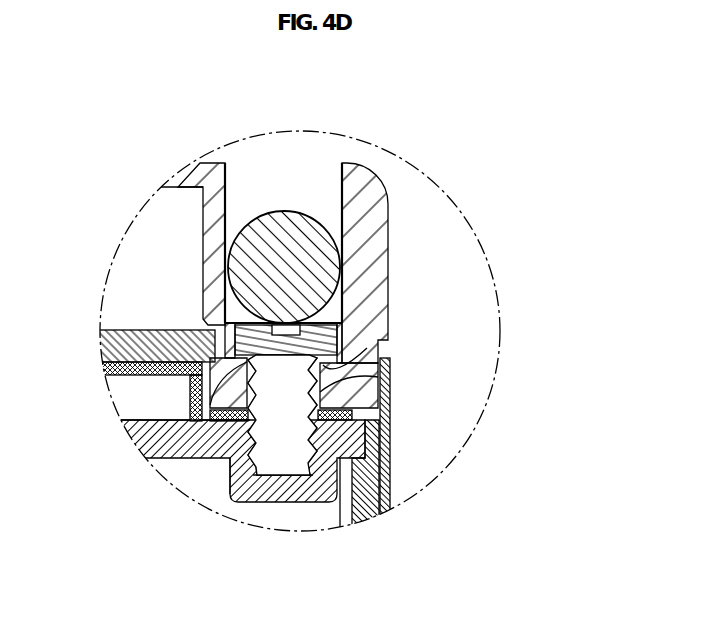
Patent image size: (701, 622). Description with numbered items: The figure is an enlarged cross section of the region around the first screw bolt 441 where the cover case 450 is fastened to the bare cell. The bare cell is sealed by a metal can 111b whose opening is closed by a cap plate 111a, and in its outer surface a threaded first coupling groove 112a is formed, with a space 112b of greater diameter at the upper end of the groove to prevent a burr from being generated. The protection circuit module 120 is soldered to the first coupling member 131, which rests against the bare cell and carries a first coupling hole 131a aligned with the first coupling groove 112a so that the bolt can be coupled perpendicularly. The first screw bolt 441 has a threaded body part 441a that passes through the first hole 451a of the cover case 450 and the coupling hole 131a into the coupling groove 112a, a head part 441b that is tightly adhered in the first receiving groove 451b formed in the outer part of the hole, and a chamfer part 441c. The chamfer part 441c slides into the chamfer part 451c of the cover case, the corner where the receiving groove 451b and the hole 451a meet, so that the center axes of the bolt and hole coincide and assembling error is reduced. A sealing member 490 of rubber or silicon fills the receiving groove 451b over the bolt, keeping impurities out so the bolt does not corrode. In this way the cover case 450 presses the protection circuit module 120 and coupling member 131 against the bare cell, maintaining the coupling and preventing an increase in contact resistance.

The cover case 450 is at (207, 158).
The sealing member 490 is at (288, 222).
The first screw bolt 441 is at (388, 267).
The body part 441a is at (390, 435).
The head part 441b is at (322, 318).
The chamfer part 441c is at (342, 341).
The first hole 451a is at (390, 403).
The first receiving groove 451b is at (378, 375).
The chamfer part 451c is at (390, 393).
The protection circuit module 120 is at (120, 328).
The first coupling member 131 is at (187, 393).
The first coupling hole 131a is at (228, 425).
The cap plate 111a is at (218, 458).
The can 111b is at (373, 500).
The first coupling groove 112a is at (287, 476).
The space 112b is at (338, 518).